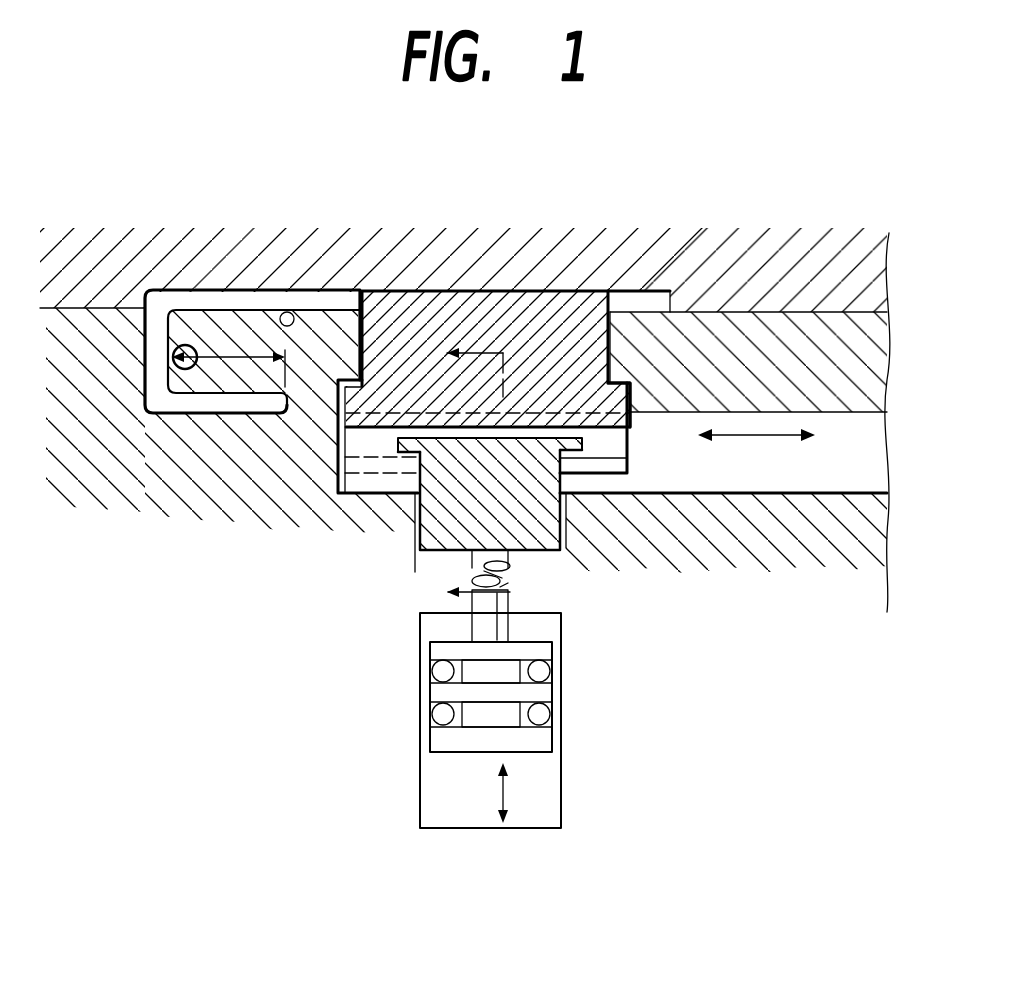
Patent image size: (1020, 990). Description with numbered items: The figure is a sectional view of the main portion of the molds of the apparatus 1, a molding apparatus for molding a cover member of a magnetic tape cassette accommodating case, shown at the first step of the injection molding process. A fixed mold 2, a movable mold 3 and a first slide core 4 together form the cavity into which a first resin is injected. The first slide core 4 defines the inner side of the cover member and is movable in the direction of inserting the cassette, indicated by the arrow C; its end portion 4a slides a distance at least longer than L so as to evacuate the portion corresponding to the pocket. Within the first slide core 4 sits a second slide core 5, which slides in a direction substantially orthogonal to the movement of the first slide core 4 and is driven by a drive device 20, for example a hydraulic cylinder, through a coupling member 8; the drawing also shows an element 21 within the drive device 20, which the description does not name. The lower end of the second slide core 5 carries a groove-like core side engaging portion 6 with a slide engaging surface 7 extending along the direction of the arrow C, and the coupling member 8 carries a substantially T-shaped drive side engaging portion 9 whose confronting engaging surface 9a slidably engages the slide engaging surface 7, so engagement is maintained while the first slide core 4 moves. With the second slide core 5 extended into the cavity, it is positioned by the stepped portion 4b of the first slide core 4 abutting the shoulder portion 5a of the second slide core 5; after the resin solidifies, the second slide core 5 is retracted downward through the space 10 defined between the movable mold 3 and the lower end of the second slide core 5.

The apparatus 1 is at (96, 246).
The fixed mold 2 is at (191, 246).
The movable mold 3 is at (258, 472).
The first slide core 4 is at (660, 327).
The end portion 4a is at (215, 384).
The stepped portion 4b is at (634, 395).
The second slide core 5 is at (430, 318).
The shoulder portion 5a is at (610, 451).
The core side engaging portion 6 is at (360, 443).
The slide engaging surface 7 is at (627, 420).
The coupling member 8 is at (567, 548).
The drive side engaging portion 9 is at (413, 522).
The confronting engaging surface 9a is at (407, 454).
The space 10 is at (803, 462).
The drive device 20 is at (566, 758).
The bearing 21 is at (448, 736).